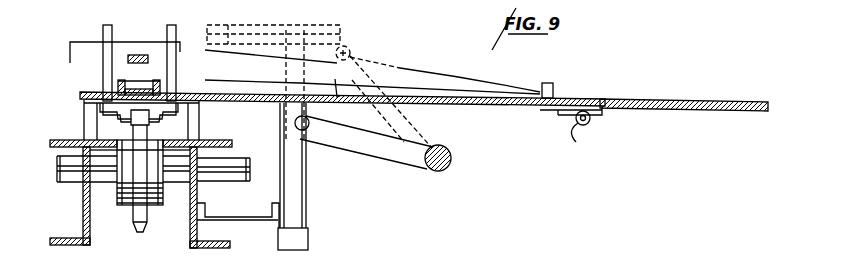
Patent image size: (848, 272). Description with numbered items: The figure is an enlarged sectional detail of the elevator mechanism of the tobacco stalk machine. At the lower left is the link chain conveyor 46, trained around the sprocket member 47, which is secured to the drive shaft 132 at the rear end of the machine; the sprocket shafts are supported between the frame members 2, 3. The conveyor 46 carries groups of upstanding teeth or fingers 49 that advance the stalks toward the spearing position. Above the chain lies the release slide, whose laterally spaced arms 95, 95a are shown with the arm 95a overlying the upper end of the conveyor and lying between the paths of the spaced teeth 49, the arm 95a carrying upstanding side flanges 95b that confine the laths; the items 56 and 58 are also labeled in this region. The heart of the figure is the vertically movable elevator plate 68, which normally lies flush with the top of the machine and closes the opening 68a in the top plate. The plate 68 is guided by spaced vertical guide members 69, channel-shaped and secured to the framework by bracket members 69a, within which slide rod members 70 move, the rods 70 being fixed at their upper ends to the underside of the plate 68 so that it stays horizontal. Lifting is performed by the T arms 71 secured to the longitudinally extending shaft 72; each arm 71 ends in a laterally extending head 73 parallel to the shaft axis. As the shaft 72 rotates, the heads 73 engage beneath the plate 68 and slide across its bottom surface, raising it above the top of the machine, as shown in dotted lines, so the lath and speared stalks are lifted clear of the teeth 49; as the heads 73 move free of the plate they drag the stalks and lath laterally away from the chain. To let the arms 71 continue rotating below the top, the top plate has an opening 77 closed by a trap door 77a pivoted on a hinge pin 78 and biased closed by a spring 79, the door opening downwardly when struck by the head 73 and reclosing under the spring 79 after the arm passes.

The frame member 2 is at (190, 222).
The frame member 3 is at (83, 204).
The link chain conveyor 46 is at (84, 117).
The sprocket member 47 is at (131, 212).
The upstanding teeth or fingers 49 is at (153, 30).
The member 56 is at (503, 271).
The stop block 58 is at (128, 58).
The elevator plate 68 is at (221, 92).
The opening 68a is at (372, 61).
The vertical guide members 69 is at (293, 235).
The bracket members 69a is at (252, 218).
The slide rod members 70 is at (293, 172).
The T arms 71 is at (373, 143).
The shaft 72 is at (452, 158).
The laterally extending head 73 is at (296, 124).
The opening 77 is at (552, 81).
The trap door 77a is at (573, 98).
The hinge pin 78 is at (591, 119).
The spring 79 is at (586, 140).
The arm of slide member 95 is at (199, 103).
The arm of slide member 95a is at (146, 79).
The upstanding side flanges 95b is at (116, 80).
The drive shaft 132 is at (60, 168).